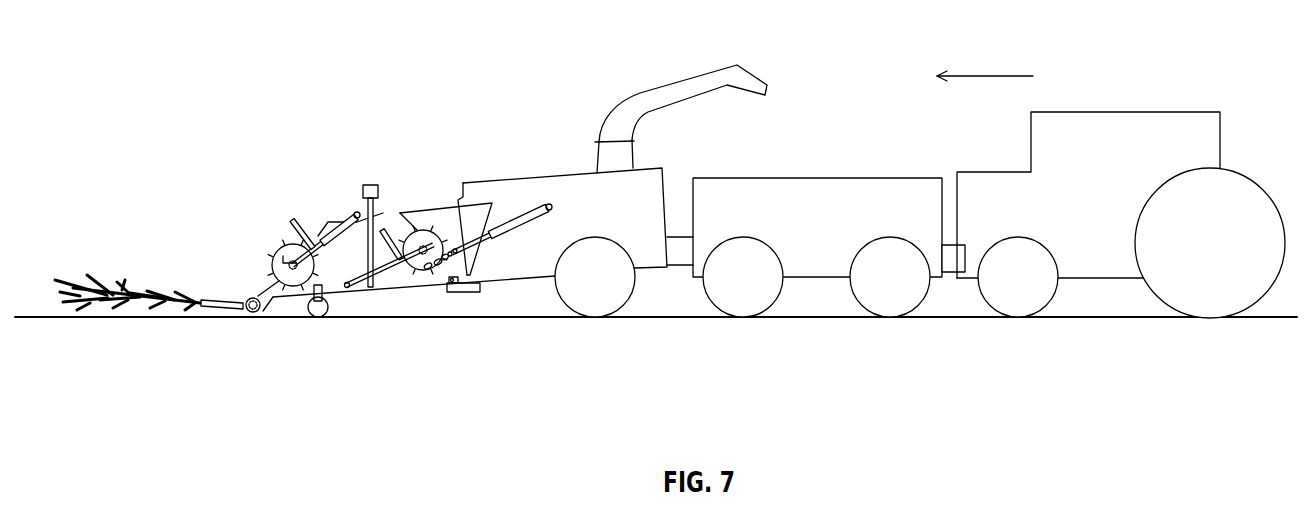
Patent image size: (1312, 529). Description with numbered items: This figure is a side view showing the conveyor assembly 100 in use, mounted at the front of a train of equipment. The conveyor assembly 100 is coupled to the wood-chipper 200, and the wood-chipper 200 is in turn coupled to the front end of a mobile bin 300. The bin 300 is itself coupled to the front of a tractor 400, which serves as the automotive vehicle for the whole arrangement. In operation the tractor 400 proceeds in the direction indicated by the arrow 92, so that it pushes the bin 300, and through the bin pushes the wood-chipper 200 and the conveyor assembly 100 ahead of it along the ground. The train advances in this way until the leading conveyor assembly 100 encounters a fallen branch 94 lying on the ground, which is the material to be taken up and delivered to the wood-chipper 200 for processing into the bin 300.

The arrow 92 is at (983, 75).
The fallen branch 94 is at (170, 297).
The conveyor assembly 100 is at (301, 160).
The wood-chipper 200 is at (539, 116).
The mobile bin 300 is at (835, 60).
The tractor 400 is at (1144, 75).